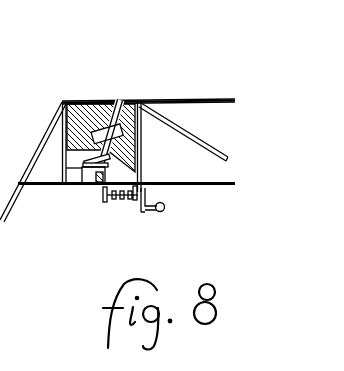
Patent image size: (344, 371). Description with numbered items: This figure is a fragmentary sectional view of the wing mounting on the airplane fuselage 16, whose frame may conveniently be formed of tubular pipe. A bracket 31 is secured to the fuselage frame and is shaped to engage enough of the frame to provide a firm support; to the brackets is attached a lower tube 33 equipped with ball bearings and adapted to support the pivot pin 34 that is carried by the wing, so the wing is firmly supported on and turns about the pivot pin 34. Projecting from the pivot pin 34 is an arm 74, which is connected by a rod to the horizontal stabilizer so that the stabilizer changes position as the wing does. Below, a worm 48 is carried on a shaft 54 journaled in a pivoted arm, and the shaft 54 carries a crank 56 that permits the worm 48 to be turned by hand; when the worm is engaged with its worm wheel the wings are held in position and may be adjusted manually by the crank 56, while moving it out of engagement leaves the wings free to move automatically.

The fuselage 16 is at (178, 99).
The bracket 31 is at (80, 103).
The lower tube 33 is at (88, 186).
The pivot pin 34 is at (116, 98).
The worm 48 is at (118, 200).
The shaft 54 is at (144, 189).
The crank 56 is at (156, 212).
The arm 74 is at (112, 143).